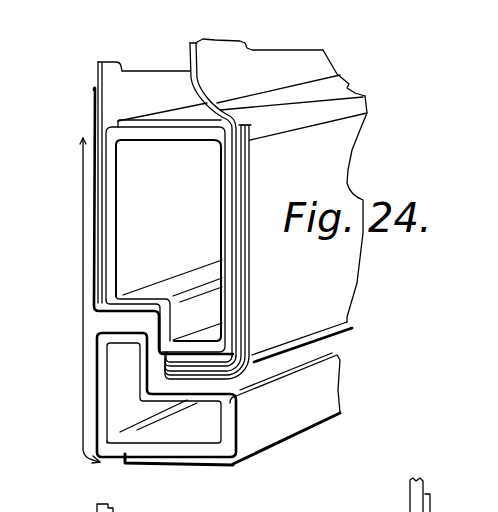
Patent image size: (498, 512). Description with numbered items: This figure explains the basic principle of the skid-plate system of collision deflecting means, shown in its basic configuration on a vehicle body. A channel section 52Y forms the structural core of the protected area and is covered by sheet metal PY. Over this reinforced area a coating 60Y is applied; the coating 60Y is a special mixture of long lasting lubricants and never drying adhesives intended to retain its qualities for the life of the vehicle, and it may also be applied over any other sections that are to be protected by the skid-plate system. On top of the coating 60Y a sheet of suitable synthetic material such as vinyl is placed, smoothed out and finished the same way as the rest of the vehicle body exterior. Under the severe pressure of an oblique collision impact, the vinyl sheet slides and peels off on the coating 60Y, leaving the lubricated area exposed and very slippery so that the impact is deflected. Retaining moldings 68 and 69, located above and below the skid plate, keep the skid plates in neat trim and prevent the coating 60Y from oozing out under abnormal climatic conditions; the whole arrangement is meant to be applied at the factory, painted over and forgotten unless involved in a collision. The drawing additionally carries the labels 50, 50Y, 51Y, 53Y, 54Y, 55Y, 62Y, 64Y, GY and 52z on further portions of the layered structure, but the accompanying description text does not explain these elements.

The clip assembly 50 is at (142, 8).
The base plate 50Y is at (138, 465).
The lower channel 51Y is at (97, 421).
The channel section 52Y is at (161, 104).
The web frame 53Y is at (116, 177).
The top flange 54Y is at (167, 71).
The side wall 55Y is at (93, 120).
The sheet metal PY is at (255, 50).
The coating 60Y is at (238, 263).
The panel layer 62Y is at (242, 295).
The panel layer 64Y is at (246, 320).
The retaining molding 68 is at (348, 88).
The retaining molding 69 is at (352, 325).
The gap GY is at (83, 277).
The flange of adjacent figure 52z is at (263, 495).